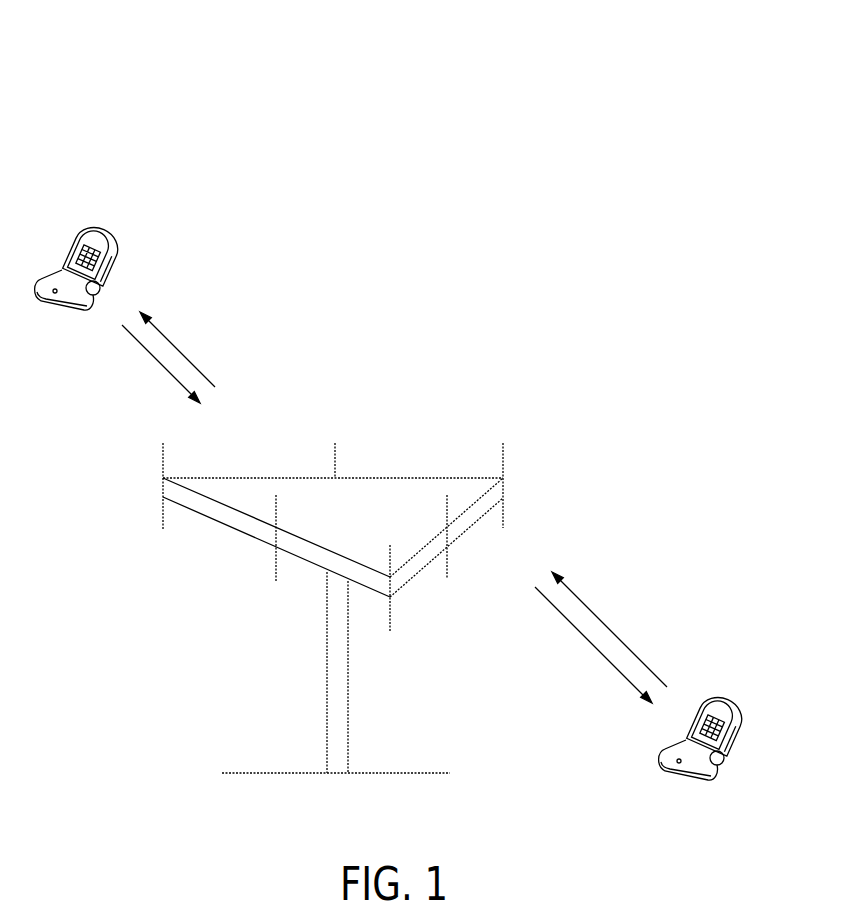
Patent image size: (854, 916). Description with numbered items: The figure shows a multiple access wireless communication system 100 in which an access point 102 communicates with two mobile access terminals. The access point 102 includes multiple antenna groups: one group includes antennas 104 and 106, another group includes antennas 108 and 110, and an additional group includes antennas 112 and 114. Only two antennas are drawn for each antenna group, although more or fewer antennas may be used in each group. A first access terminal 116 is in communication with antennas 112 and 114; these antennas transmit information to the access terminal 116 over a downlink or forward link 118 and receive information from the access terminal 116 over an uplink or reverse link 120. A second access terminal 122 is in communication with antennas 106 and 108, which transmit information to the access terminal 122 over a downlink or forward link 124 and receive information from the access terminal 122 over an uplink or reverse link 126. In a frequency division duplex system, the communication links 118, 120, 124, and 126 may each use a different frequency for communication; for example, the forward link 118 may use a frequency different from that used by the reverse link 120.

The multiple access wireless communication system 100 is at (80, 79).
The access point 102 is at (338, 775).
The antenna 104 is at (503, 458).
The antenna 106 is at (449, 566).
The antenna 108 is at (392, 615).
The antenna 110 is at (274, 562).
The antenna 112 is at (165, 458).
The antenna 114 is at (337, 458).
The access terminal 116 is at (117, 240).
The downlink or forward link 118 is at (180, 350).
The uplink or reverse link 120 is at (157, 363).
The access terminal 122 is at (732, 707).
The downlink or forward link 124 is at (588, 640).
The uplink or reverse link 126 is at (608, 628).